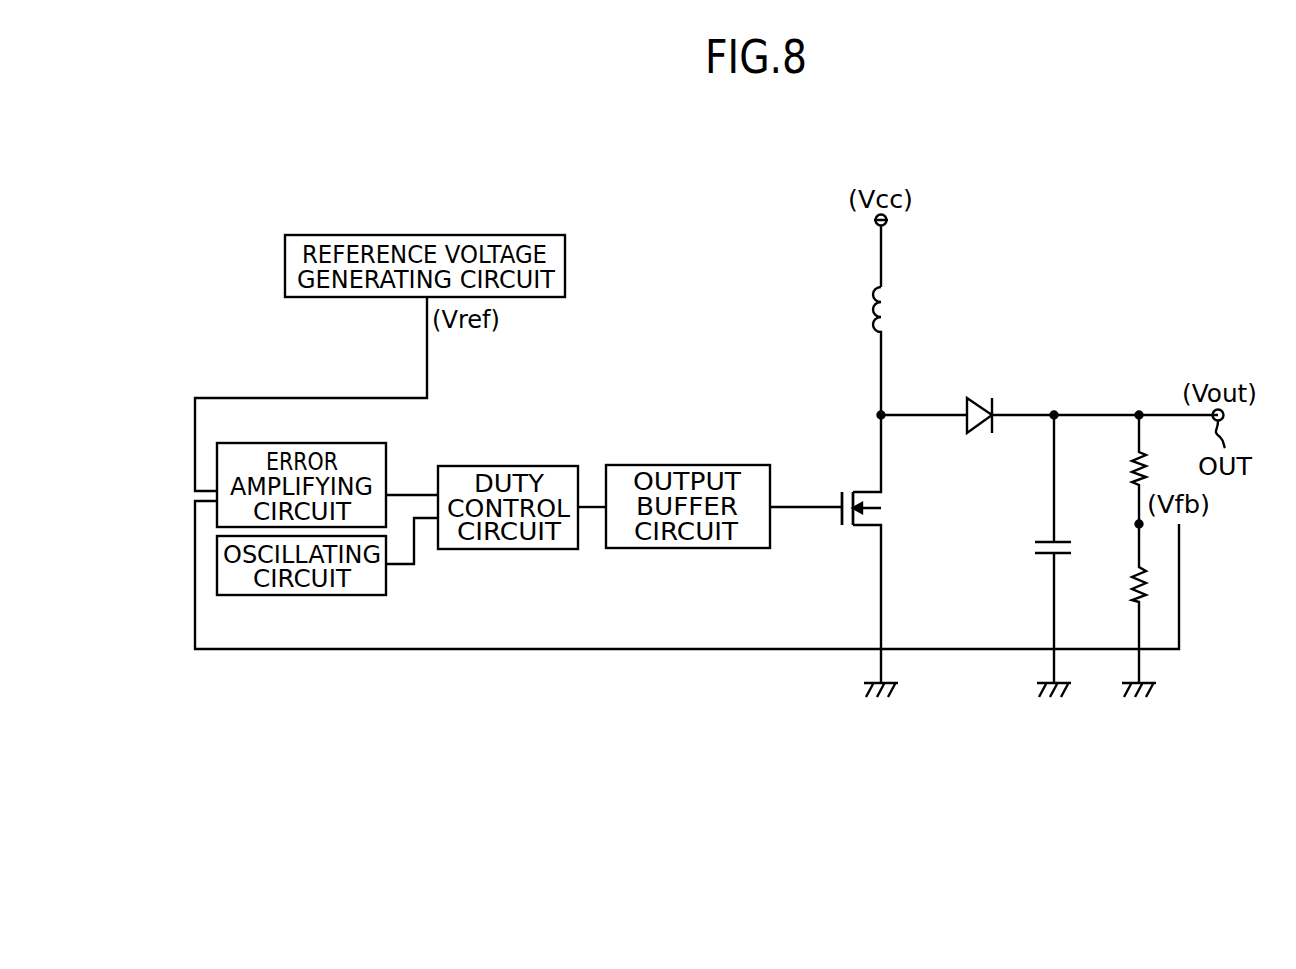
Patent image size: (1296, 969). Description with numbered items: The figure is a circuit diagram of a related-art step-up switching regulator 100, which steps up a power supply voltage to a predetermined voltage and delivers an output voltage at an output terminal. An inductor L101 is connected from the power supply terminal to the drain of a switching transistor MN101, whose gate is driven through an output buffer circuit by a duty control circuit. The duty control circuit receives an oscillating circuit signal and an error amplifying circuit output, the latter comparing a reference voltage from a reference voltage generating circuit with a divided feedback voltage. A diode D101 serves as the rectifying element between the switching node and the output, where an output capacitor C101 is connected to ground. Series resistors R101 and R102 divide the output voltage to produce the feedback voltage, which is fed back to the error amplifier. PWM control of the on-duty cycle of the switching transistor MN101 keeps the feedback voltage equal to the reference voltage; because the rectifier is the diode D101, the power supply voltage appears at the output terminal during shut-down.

The step-up switching regulator 100 is at (745, 247).
The inductor L101 is at (910, 351).
The diode D101 is at (980, 400).
The switching transistor MN101 is at (904, 508).
The output capacitor C101 is at (1029, 549).
The voltage-dividing resistor R101 is at (1106, 469).
The voltage-dividing resistor R102 is at (1106, 603).